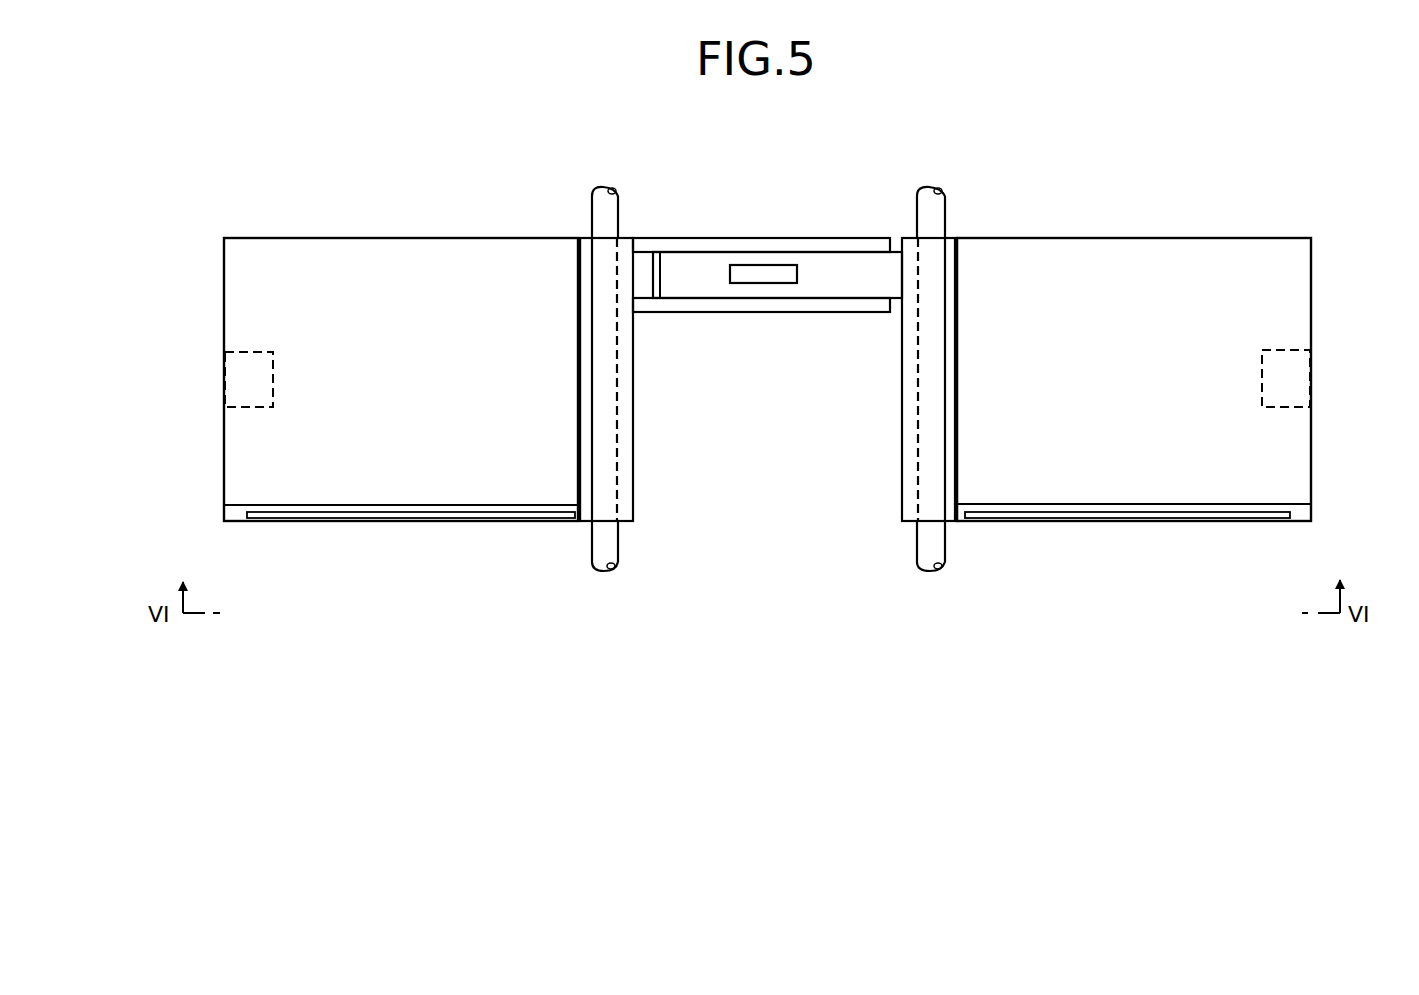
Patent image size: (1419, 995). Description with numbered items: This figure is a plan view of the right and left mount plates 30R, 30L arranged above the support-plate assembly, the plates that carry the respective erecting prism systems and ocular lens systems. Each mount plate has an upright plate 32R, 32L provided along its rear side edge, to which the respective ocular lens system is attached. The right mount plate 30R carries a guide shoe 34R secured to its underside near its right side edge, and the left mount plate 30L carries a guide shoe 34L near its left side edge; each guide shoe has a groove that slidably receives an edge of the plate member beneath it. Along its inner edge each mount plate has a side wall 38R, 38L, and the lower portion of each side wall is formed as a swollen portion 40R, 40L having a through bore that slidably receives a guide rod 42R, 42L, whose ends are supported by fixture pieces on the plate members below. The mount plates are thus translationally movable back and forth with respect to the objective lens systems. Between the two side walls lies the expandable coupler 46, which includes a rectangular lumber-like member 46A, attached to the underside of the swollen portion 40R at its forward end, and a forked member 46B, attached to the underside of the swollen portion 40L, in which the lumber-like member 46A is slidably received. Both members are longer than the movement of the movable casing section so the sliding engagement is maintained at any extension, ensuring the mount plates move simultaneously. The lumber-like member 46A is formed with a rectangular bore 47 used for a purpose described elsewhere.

The left mount plate 30L is at (425, 390).
The right mount plate 30R is at (1114, 390).
The upright plate 32L is at (408, 508).
The upright plate 32R is at (1140, 508).
The guide shoe 34L is at (245, 382).
The guide shoe 34R is at (1300, 378).
The side wall 38L is at (575, 318).
The side wall 38R is at (962, 318).
The swollen portion 40L is at (633, 432).
The swollen portion 40R is at (908, 435).
The guide rod 42L is at (610, 545).
The guide rod 42R is at (925, 552).
The expandable coupler 46 is at (771, 234).
The lumber-like member 46A is at (853, 290).
The forked member 46B is at (690, 300).
The rectangular bore 47 is at (766, 276).